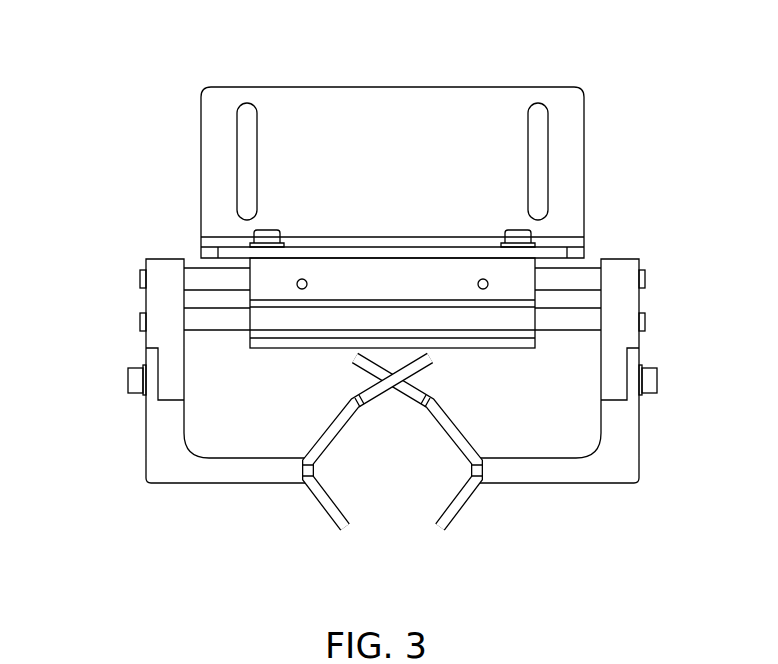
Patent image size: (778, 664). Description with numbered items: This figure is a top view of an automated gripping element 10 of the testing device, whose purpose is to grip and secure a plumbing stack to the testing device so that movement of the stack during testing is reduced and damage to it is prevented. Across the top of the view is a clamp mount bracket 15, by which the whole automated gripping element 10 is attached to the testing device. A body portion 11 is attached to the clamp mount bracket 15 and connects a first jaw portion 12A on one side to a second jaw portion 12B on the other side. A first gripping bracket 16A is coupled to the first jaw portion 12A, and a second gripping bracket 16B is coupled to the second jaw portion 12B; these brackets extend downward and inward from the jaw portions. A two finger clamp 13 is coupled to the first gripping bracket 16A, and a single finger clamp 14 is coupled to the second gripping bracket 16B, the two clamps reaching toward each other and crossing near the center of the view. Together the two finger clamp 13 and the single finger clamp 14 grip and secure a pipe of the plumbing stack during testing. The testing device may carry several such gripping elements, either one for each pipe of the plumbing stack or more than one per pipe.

The automated gripping element 10 is at (104, 58).
The body portion 11 is at (522, 277).
The first jaw portion 12A is at (161, 278).
The second jaw portion 12B is at (630, 279).
The two finger clamp 13 is at (343, 522).
The single finger clamp 14 is at (444, 518).
The clamp mount bracket 15 is at (459, 106).
The first gripping bracket 16A is at (157, 471).
The second gripping bracket 16B is at (626, 472).